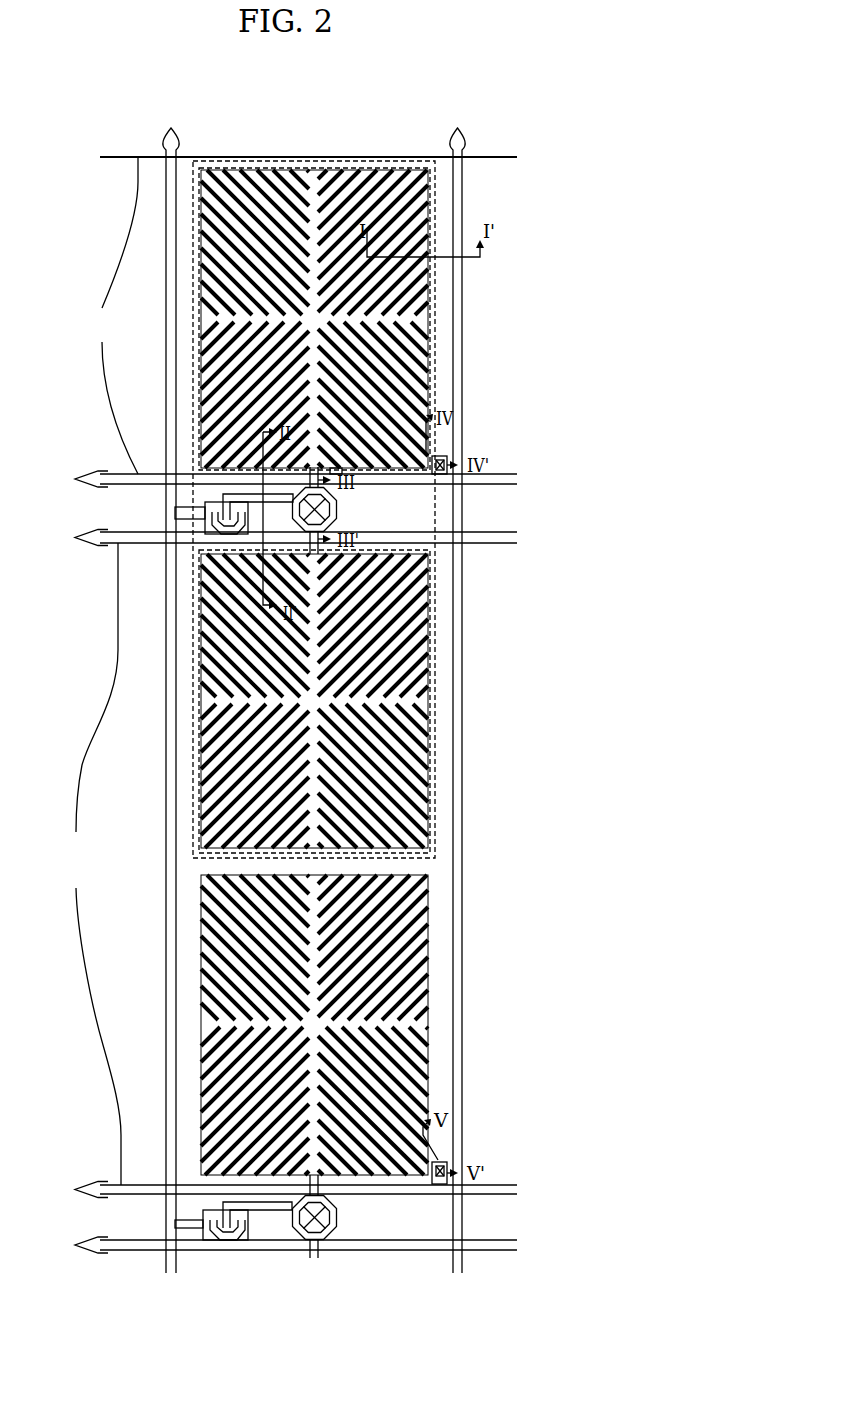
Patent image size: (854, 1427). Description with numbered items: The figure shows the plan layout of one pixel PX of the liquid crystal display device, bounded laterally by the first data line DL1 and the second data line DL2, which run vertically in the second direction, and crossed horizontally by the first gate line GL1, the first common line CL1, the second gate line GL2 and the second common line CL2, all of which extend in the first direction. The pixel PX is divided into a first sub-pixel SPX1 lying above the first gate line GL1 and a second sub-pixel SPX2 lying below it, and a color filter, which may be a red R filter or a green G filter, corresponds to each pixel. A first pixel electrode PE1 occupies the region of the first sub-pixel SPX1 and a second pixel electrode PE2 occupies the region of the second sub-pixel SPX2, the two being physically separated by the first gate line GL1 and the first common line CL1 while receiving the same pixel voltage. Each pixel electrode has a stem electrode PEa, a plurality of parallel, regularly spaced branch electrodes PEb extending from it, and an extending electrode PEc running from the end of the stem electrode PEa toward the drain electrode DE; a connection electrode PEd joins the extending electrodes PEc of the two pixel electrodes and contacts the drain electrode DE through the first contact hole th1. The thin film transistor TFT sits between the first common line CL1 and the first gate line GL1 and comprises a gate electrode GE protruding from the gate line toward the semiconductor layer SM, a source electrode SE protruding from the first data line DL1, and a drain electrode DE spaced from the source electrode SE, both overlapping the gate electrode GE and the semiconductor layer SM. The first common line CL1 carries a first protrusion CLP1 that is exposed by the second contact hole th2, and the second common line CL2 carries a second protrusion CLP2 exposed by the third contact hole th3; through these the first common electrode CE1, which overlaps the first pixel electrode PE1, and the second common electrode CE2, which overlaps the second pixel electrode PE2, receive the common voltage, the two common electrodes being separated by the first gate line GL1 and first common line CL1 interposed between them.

The first data line DL1 is at (170, 690).
The second data line DL2 is at (455, 690).
The pixel PX is at (348, 157).
The red filter R is at (441, 374).
The green filter G is at (474, 374).
The first sub-pixel SPX1 is at (203, 314).
The second sub-pixel SPX2 is at (200, 763).
The first common electrode CE1 is at (108, 315).
The second common electrode CE2 is at (90, 864).
The first pixel electrode PE1 is at (440, 331).
The second pixel electrode PE2 is at (440, 690).
The stem electrode PEa is at (423, 318).
The branch electrodes PEb is at (423, 348).
The extending electrode PEc is at (343, 472).
The connection electrode PEd is at (338, 514).
The first common line CL1 is at (277, 481).
The second common line CL2 is at (277, 1191).
The first gate line GL1 is at (277, 543).
The second gate line GL2 is at (277, 1248).
The thin film transistor TFT is at (203, 490).
The gate electrode GE is at (203, 525).
The source electrode SE is at (220, 530).
The drain electrode DE is at (240, 495).
The semiconductor layer SM is at (223, 515).
The first contact hole th1 is at (330, 509).
The second contact hole th2 is at (453, 463).
The third contact hole th3 is at (450, 1170).
The first protrusion CLP1 is at (447, 456).
The second protrusion CLP2 is at (448, 1162).